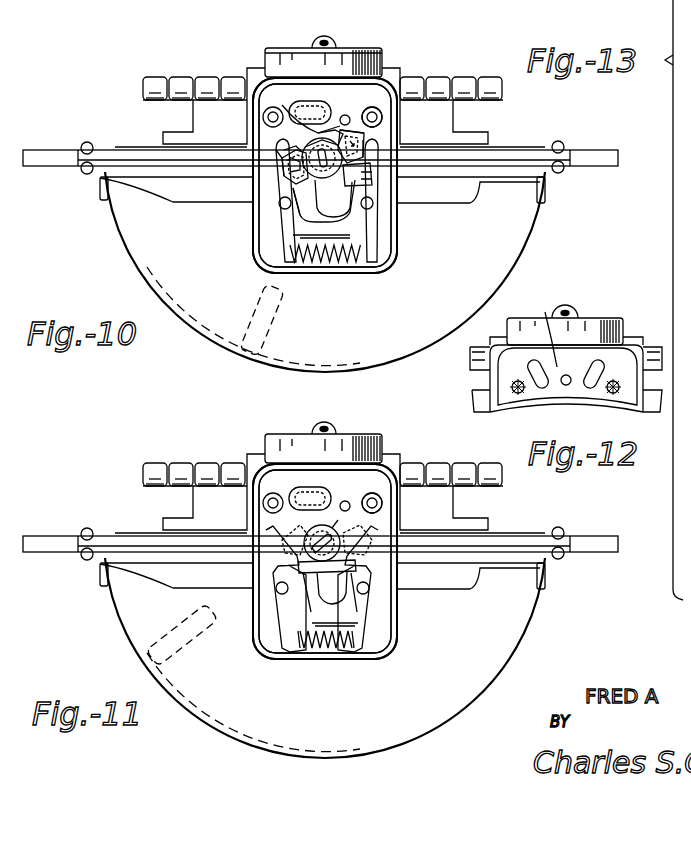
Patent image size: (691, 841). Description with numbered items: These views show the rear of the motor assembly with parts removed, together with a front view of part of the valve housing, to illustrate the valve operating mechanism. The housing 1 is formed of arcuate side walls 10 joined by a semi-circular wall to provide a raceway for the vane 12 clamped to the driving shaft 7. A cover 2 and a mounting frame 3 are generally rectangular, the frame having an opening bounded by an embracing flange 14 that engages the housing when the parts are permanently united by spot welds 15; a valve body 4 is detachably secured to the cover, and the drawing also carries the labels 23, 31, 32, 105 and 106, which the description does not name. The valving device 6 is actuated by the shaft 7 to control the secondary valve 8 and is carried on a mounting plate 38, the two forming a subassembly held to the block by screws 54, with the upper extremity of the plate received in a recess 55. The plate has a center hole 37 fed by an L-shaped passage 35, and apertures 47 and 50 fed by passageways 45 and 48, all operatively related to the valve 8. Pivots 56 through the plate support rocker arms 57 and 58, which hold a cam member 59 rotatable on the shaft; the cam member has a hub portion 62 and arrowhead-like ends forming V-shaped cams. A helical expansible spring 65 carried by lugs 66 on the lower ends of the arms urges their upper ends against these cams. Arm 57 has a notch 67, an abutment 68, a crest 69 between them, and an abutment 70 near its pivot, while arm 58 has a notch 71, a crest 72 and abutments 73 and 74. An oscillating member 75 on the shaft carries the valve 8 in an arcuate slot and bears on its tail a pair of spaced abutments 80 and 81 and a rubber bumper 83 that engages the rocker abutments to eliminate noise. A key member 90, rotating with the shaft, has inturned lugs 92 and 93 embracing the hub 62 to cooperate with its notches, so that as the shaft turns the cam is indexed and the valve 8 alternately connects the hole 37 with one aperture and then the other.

In FIG. 10, the housing 1 is at (532, 230).
In FIG. 11, the housing 1 is at (524, 630).
In FIG. 10, the cover 2 is at (548, 145).
In FIG. 11, the cover 2 is at (542, 535).
In FIG. 10, the mounting frame 3 is at (547, 168).
In FIG. 11, the mounting frame 3 is at (547, 552).
In FIG. 10, the valve body 4 is at (448, 107).
In FIG. 11, the valve body 4 is at (323, 492).
In FIG. 12, the valve body 4 is at (636, 340).
In FIG. 10, the valving device 6 is at (217, 211).
In FIG. 11, the valving device 6 is at (408, 607).
In FIG. 11, the driving shaft 7 is at (340, 523).
In FIG. 10, the secondary valve 8 is at (300, 115).
In FIG. 11, the secondary valve 8 is at (300, 520).
In FIG. 10, the side walls 10 is at (267, 316).
In FIG. 11, the side walls 10 is at (296, 702).
In FIG. 10, the vane 12 is at (248, 322).
In FIG. 11, the vane 12 is at (172, 662).
In FIG. 10, the embracing flange 14 is at (473, 192).
In FIG. 11, the embracing flange 14 is at (473, 573).
In FIG. 10, the spot welds 15 is at (228, 181).
In FIG. 10, the plate edge 23 is at (520, 147).
In FIG. 10, the bead chain 31 is at (155, 75).
In FIG. 11, the bead chain 31 is at (158, 463).
In FIG. 10, the bead chain 32 is at (508, 76).
In FIG. 11, the bead chain 32 is at (508, 462).
In FIG. 12, the L-shaped vertical passage 35 is at (570, 387).
In FIG. 10, the center hole 37 is at (342, 101).
In FIG. 11, the center hole 37 is at (315, 484).
In FIG. 10, the mounting plate 38 is at (390, 225).
In FIG. 11, the mounting plate 38 is at (385, 648).
In FIG. 12, the passageway 45 is at (532, 396).
In FIG. 10, the aperture 47 is at (315, 76).
In FIG. 11, the aperture 47 is at (302, 488).
In FIG. 12, the aperture 47 is at (565, 331).
In FIG. 12, the passageway 48 is at (590, 396).
In FIG. 10, the aperture 50 is at (347, 117).
In FIG. 11, the aperture 50 is at (343, 500).
In FIG. 10, the screws 54 is at (373, 107).
In FIG. 11, the screws 54 is at (267, 500).
In FIG. 12, the recess 55 is at (539, 332).
In FIG. 11, the pivots 56 is at (277, 590).
In FIG. 10, the rocker arm 57 is at (280, 228).
In FIG. 11, the rocker arm 57 is at (283, 610).
In FIG. 10, the rocker arm 58 is at (373, 232).
In FIG. 11, the rocker arm 58 is at (375, 628).
In FIG. 10, the cam member 59 is at (385, 117).
In FIG. 11, the cam member 59 is at (350, 528).
In FIG. 10, the hub portion 62 is at (338, 180).
In FIG. 11, the hub portion 62 is at (322, 543).
In FIG. 10, the helical expansible spring 65 is at (330, 265).
In FIG. 11, the helical expansible spring 65 is at (328, 648).
In FIG. 11, the lugs 66 is at (303, 645).
In FIG. 10, the notch 67 is at (280, 174).
In FIG. 10, the abutment 68 is at (288, 157).
In FIG. 10, the crest 69 is at (280, 164).
In FIG. 10, the abutment 70 is at (293, 210).
In FIG. 10, the notch 71 is at (367, 175).
In FIG. 10, the crest 72 is at (387, 152).
In FIG. 10, the abutment 73 is at (360, 133).
In FIG. 10, the abutment 74 is at (380, 190).
In FIG. 11, the oscillating member 75 is at (305, 525).
In FIG. 11, the abutment 80 is at (300, 594).
In FIG. 11, the abutment 81 is at (363, 567).
In FIG. 10, the rubber bumper 83 is at (336, 212).
In FIG. 11, the rubber bumper 83 is at (332, 588).
In FIG. 11, the key member 90 is at (277, 570).
In FIG. 10, the inturned lug 92 is at (306, 209).
In FIG. 10, the inturned lug 93 is at (338, 125).
In FIG. 10, the knob rim 105 is at (301, 48).
In FIG. 10, the screw head 106 is at (331, 20).
In FIG. 11, the screw head 106 is at (324, 428).
In FIG. 12, the screw head 106 is at (575, 312).